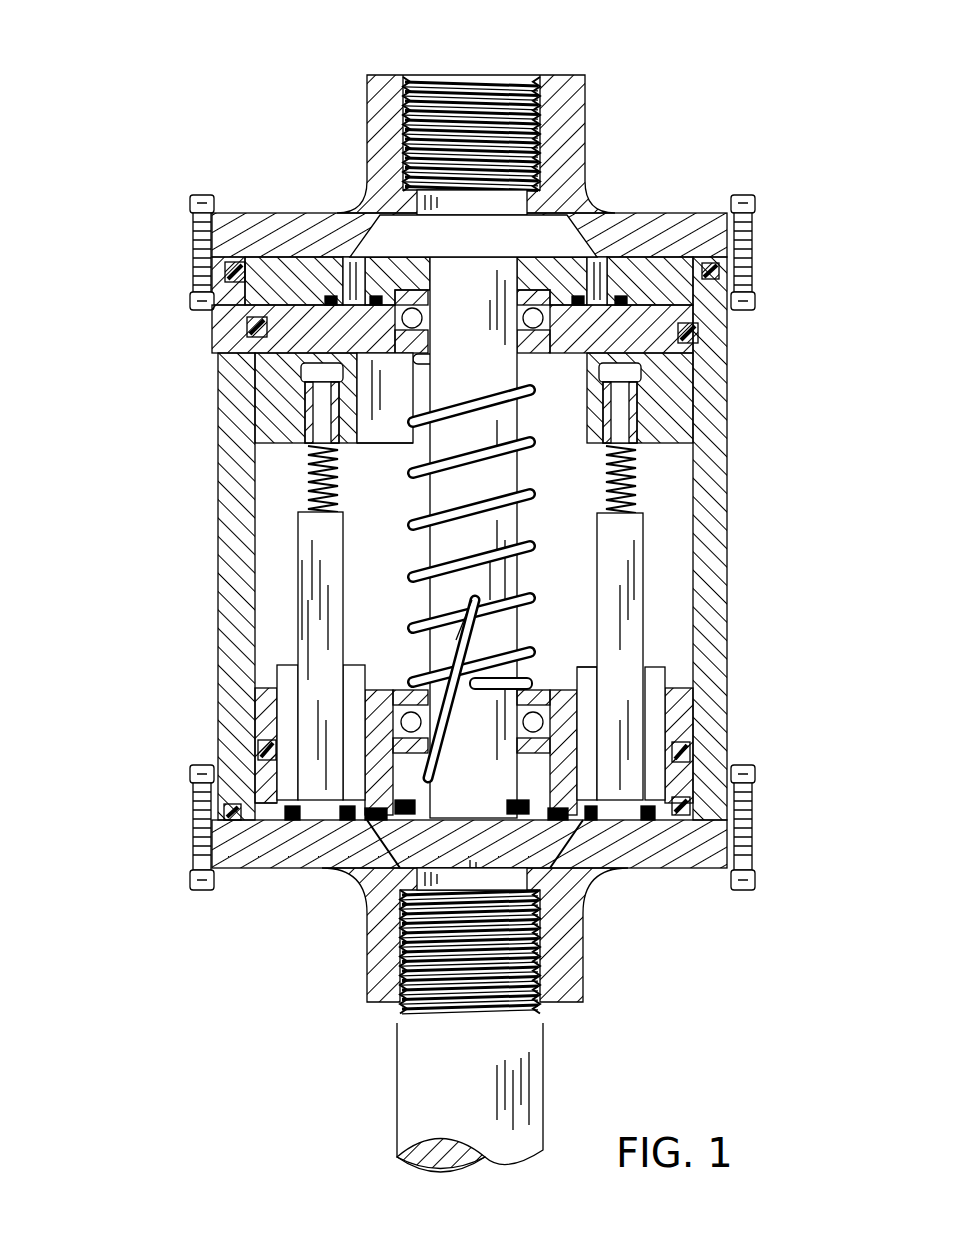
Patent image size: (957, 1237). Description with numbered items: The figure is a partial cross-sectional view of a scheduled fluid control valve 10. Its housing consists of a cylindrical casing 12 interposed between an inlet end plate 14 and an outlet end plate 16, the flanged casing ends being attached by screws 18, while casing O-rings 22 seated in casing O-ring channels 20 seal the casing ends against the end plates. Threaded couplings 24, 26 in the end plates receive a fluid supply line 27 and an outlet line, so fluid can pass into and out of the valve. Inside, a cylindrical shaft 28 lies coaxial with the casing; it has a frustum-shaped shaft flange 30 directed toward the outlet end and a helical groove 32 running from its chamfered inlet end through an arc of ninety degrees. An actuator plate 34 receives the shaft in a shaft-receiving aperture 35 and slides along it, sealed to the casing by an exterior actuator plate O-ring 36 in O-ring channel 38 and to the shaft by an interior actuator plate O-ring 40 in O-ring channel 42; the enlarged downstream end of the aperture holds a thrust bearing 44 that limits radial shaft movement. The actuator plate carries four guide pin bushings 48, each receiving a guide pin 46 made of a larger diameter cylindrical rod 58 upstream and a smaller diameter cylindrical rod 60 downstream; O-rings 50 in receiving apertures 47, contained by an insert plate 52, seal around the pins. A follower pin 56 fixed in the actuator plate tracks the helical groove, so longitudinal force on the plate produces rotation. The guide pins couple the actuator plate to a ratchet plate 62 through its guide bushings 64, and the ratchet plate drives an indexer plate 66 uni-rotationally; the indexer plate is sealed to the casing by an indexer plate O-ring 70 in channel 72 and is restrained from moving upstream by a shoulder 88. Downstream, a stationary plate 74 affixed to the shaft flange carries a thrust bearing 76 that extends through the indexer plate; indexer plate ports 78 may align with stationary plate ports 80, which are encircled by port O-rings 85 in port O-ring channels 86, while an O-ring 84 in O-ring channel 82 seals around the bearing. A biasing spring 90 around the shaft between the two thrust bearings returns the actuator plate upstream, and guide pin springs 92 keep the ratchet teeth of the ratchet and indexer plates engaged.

The scheduled fluid control valve 10 is at (118, 437).
The cylindrical casing 12 is at (712, 377).
The inlet end plate 14 is at (565, 972).
The outlet end plate 16 is at (572, 118).
The screws 18 is at (745, 212).
The casing O-ring channel 20 is at (236, 822).
The casing O-ring 22 is at (232, 822).
The threaded coupling 24 is at (433, 993).
The threaded coupling 26 is at (485, 95).
The fluid supply line 27 is at (522, 1080).
The cylindrical shaft 28 is at (487, 346).
The shaft flange 30 is at (558, 245).
The helical groove 32 is at (418, 626).
The actuator plate 34 is at (677, 720).
The shaft-receiving aperture 35 is at (578, 668).
The exterior actuator plate O-ring 36 is at (690, 758).
The O-ring channel 38 is at (683, 750).
The interior actuator plate O-ring 40 is at (578, 868).
The O-ring channel 42 is at (555, 825).
The thrust bearing 44 is at (533, 690).
The guide pin 46 is at (320, 532).
The receiving aperture 47 is at (390, 742).
The guide pin bushing 48 is at (650, 690).
The O-ring 50 is at (292, 822).
The insert plate 52 is at (372, 818).
The follower pin 56 is at (420, 762).
The larger diameter cylindrical rod 58 is at (318, 582).
The smaller diameter cylindrical rod 60 is at (640, 420).
The ratchet plate 62 is at (275, 403).
The guide bushing 64 is at (300, 421).
The indexer plate 66 is at (262, 368).
The indexer plate O-ring 70 is at (238, 326).
The channel 72 is at (290, 345).
The stationary plate 74 is at (290, 272).
The thrust bearing 76 is at (405, 272).
The indexer plate port 78 is at (368, 357).
The stationary plate port 80 is at (593, 300).
The O-ring channel 82 is at (558, 360).
The O-ring 84 is at (595, 479).
The port O-ring 85 is at (620, 298).
The port O-ring channel 86 is at (370, 362).
The shoulder 88 is at (262, 374).
The biasing spring 90 is at (332, 482).
The guide pin spring 92 is at (322, 447).